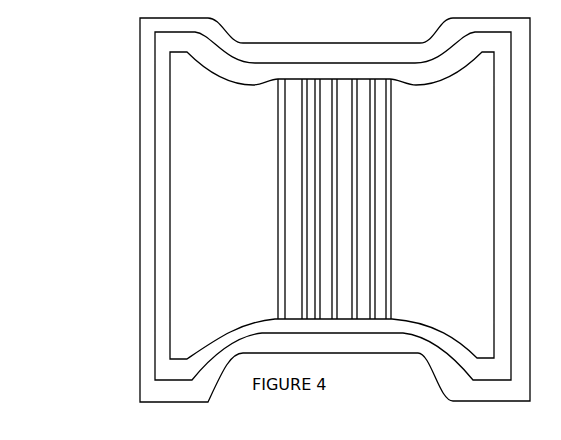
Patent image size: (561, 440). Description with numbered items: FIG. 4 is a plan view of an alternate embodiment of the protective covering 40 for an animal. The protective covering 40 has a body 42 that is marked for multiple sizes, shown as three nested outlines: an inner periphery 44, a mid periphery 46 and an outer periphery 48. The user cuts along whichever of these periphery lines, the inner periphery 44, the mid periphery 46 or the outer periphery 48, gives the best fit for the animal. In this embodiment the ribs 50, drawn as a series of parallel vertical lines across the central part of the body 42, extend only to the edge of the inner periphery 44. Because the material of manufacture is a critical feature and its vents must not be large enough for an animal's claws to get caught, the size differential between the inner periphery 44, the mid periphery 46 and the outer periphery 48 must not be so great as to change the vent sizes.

The protective covering 40 is at (80, 109).
The body 42 is at (332, 205).
The inner periphery 44 is at (170, 260).
The mid periphery 46 is at (155, 243).
The outer periphery 48 is at (141, 302).
The ribs 50 is at (391, 213).